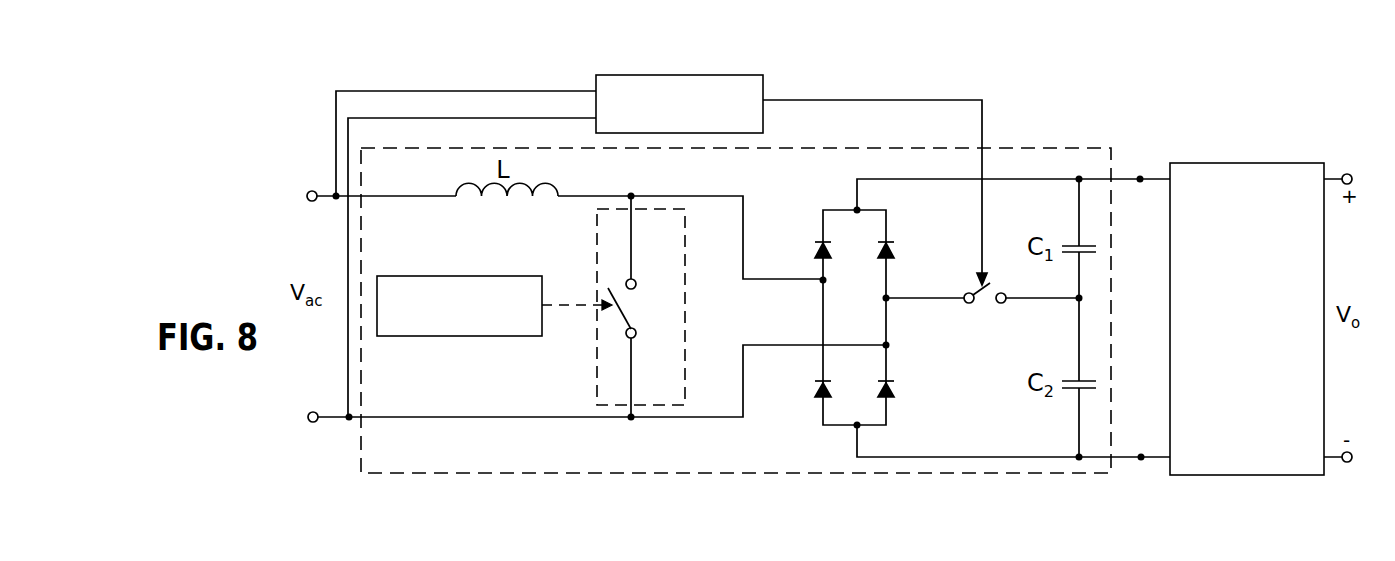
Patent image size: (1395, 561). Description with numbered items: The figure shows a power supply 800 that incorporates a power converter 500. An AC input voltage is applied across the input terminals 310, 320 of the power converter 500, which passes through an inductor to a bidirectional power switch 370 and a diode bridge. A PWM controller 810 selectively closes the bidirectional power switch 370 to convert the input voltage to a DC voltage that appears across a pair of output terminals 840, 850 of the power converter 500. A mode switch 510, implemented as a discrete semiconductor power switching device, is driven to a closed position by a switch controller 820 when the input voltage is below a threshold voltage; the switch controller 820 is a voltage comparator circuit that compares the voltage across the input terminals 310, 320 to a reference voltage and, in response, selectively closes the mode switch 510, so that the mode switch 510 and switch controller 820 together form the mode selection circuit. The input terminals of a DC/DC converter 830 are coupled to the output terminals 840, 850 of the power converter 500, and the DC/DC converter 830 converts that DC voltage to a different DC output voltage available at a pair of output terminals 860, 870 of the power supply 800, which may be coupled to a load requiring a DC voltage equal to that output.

The input terminal 310 is at (312, 190).
The input terminal 320 is at (313, 411).
The bidirectional power switch 370 is at (677, 320).
The power converter 500 is at (1023, 148).
The mode switch 510 is at (988, 309).
The power supply 800 is at (942, 82).
The PWM controller 810 is at (457, 275).
The switch controller 820 is at (660, 75).
The DC/DC converter 830 is at (1251, 163).
The output terminal 840 is at (1141, 176).
The output terminal 850 is at (1141, 454).
The output terminal 860 is at (1347, 173).
The output terminal 870 is at (1348, 463).